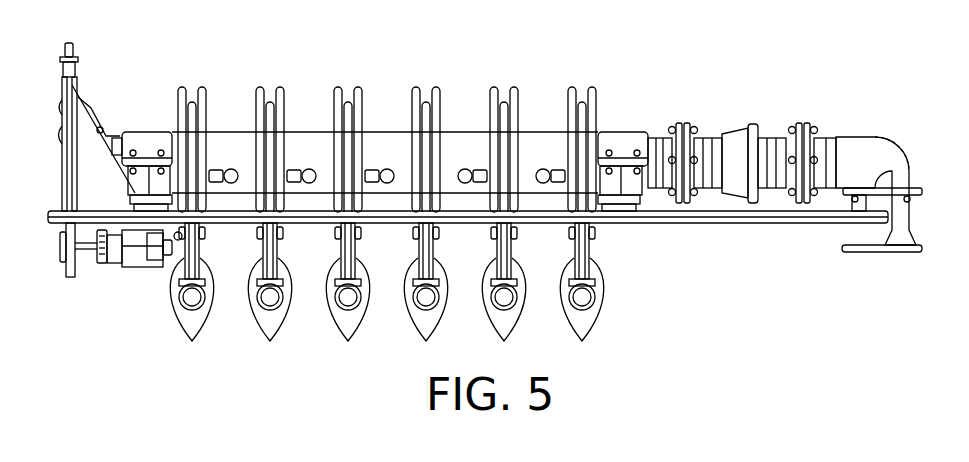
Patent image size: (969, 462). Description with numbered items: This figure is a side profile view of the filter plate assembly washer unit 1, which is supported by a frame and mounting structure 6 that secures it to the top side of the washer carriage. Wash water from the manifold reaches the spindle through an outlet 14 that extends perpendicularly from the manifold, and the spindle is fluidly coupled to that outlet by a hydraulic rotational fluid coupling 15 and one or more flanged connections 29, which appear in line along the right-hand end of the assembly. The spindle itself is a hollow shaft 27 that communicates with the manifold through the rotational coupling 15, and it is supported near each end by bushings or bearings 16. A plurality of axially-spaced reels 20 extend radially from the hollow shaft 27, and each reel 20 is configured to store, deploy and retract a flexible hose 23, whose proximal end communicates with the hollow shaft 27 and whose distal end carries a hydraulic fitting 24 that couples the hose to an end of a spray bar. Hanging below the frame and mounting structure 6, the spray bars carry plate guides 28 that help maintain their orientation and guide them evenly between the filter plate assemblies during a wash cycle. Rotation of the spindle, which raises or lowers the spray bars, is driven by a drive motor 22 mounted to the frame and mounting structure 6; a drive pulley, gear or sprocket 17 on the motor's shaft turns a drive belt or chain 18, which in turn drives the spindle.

The filter plate assembly washer unit 1 is at (820, 67).
The frame and mounting structure 6 is at (718, 223).
The second outlet 14 is at (860, 153).
The hydraulic rotational fluid coupling 15 is at (740, 140).
The bushing or bearing 16 is at (148, 150).
The drive pulley, gear, or sprocket 17 is at (62, 257).
The drive belt or chain 18 is at (66, 173).
The reel 20 is at (183, 115).
The drive motor 22 is at (140, 252).
The flexible hose 23 is at (77, 95).
The hydraulic fitting 24 is at (585, 293).
The hollow shaft 27 is at (390, 147).
The plate guide 28 is at (267, 322).
The flanged connection 29 is at (683, 123).